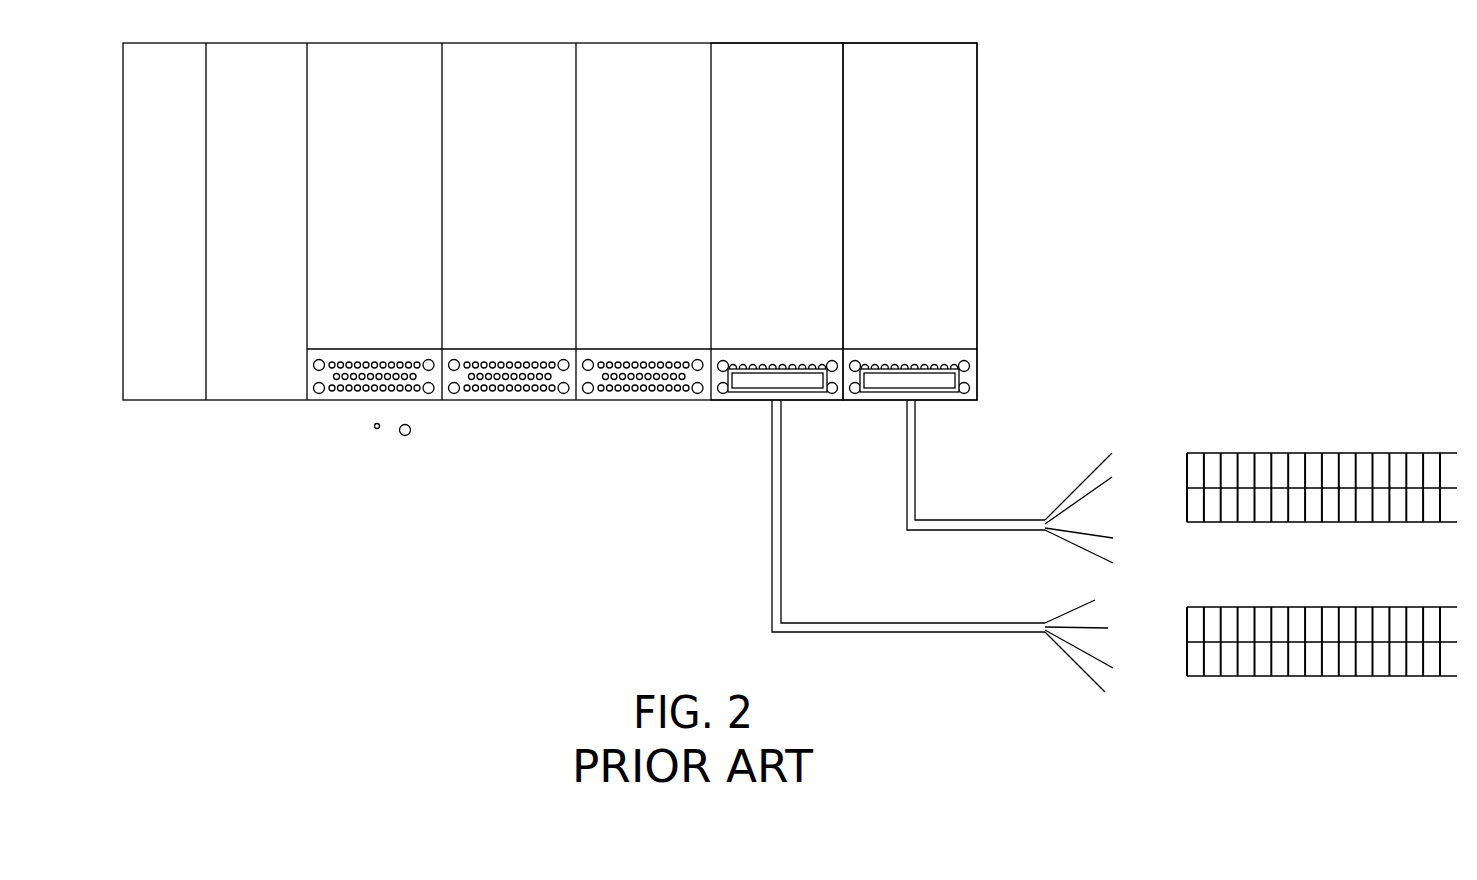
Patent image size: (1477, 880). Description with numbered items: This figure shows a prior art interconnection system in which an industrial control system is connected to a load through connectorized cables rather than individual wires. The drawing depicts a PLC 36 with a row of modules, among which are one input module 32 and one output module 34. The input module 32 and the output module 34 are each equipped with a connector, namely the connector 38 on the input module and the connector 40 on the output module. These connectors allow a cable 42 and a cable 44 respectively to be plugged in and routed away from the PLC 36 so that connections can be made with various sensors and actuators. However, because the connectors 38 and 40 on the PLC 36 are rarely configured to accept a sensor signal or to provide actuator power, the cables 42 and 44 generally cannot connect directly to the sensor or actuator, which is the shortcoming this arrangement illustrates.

The input module 32 is at (773, 63).
The output module 34 is at (893, 63).
The PLC 36 is at (368, 474).
The connector 38 is at (743, 387).
The connector 40 is at (895, 390).
The cable 42 is at (833, 622).
The cable 44 is at (978, 520).